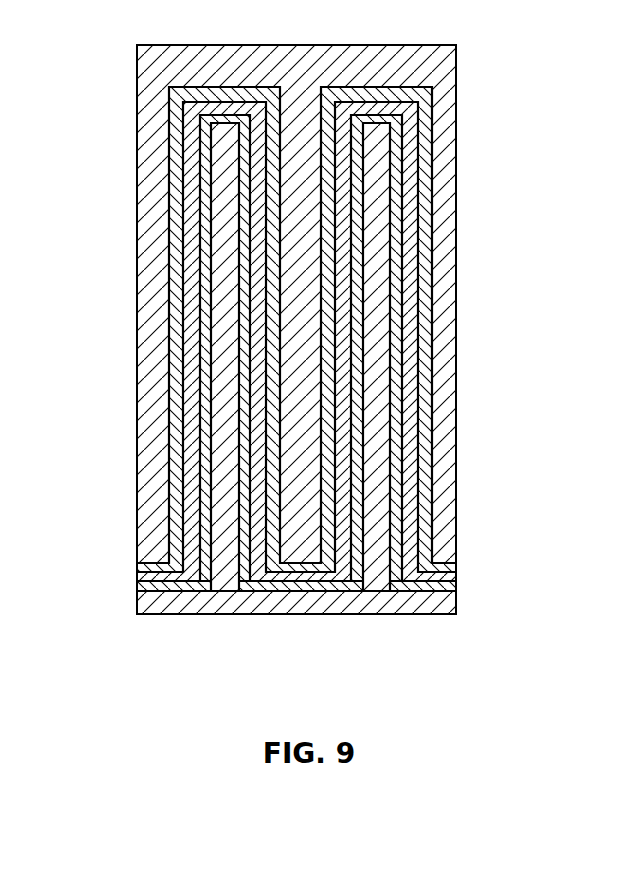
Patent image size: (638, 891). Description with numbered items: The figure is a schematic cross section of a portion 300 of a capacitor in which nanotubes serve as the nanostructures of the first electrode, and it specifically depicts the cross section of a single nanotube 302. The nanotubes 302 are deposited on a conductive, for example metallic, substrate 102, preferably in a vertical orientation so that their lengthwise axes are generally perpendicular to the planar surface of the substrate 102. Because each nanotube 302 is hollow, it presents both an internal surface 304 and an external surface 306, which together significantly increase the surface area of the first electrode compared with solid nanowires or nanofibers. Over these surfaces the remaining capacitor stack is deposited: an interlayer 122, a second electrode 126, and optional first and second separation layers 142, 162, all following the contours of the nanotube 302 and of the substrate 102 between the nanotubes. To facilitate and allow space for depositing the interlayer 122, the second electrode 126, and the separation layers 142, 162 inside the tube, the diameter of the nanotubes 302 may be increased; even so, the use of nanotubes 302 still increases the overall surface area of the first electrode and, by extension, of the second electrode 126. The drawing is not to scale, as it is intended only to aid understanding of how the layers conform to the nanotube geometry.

The substrate 102 is at (220, 600).
The interlayer 122 is at (312, 582).
The second electrode 126 is at (302, 97).
The first separation layer 142 is at (389, 105).
The second separation layer 162 is at (217, 96).
The portion of a capacitor 300 is at (118, 240).
The nanotube 302 is at (220, 340).
The internal surface 304 is at (243, 295).
The external surface 306 is at (208, 395).